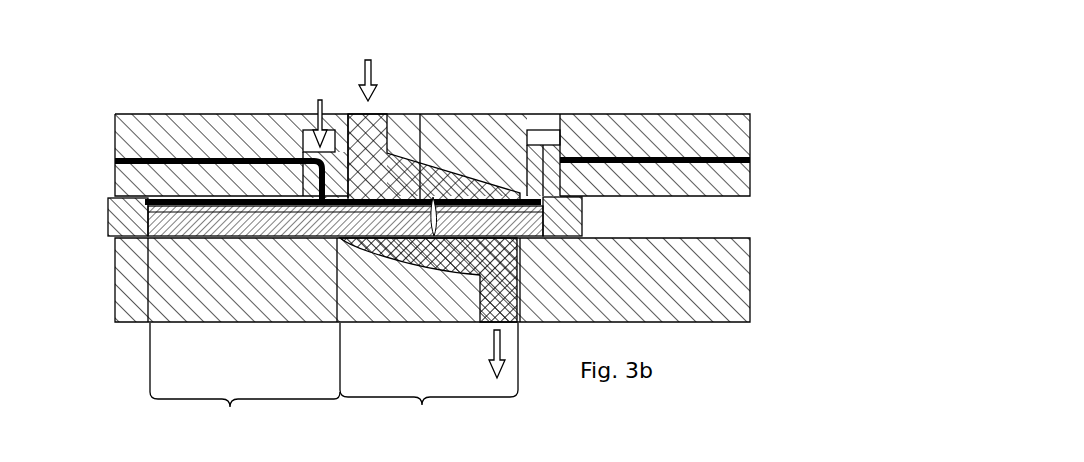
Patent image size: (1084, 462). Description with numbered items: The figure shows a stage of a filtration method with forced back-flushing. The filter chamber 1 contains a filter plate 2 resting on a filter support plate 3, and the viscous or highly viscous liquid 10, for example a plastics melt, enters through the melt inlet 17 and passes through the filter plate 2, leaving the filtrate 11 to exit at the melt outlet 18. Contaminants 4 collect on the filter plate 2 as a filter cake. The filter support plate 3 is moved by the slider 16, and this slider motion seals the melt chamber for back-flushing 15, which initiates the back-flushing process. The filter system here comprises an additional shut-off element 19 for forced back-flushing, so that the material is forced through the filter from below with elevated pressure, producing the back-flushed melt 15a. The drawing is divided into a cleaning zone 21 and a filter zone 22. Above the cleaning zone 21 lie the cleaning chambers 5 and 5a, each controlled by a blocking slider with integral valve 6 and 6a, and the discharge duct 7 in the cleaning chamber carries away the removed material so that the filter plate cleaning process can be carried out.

The filter chamber 1 is at (137, 312).
The filter plate 2 is at (420, 114).
The filter support plate 3 is at (510, 235).
The contaminants (filter cake) 4 is at (145, 152).
The cleaning chamber 5 is at (118, 132).
The cleaning chamber 5a is at (675, 132).
The blocking slider with integral valve 6 is at (327, 128).
The blocking slider with integral valve 6a is at (548, 143).
The discharge duct in the cleaning chamber 7 is at (186, 157).
The viscous or highly viscous liquid to be filtered 10 is at (457, 145).
The filtrate of the viscous or highly viscous liquid 11 is at (505, 266).
The melt chamber for back-flushing 15 is at (233, 212).
The back-flushed melt 15a is at (266, 192).
The slider for moving the filter or the filter support plate 16 is at (582, 213).
The melt inlet 17 is at (367, 65).
The melt outlet 18 is at (481, 354).
The shut-off element for forced back-flushing 19 is at (331, 232).
The cleaning zone 21 is at (245, 384).
The filter zone 22 is at (429, 379).